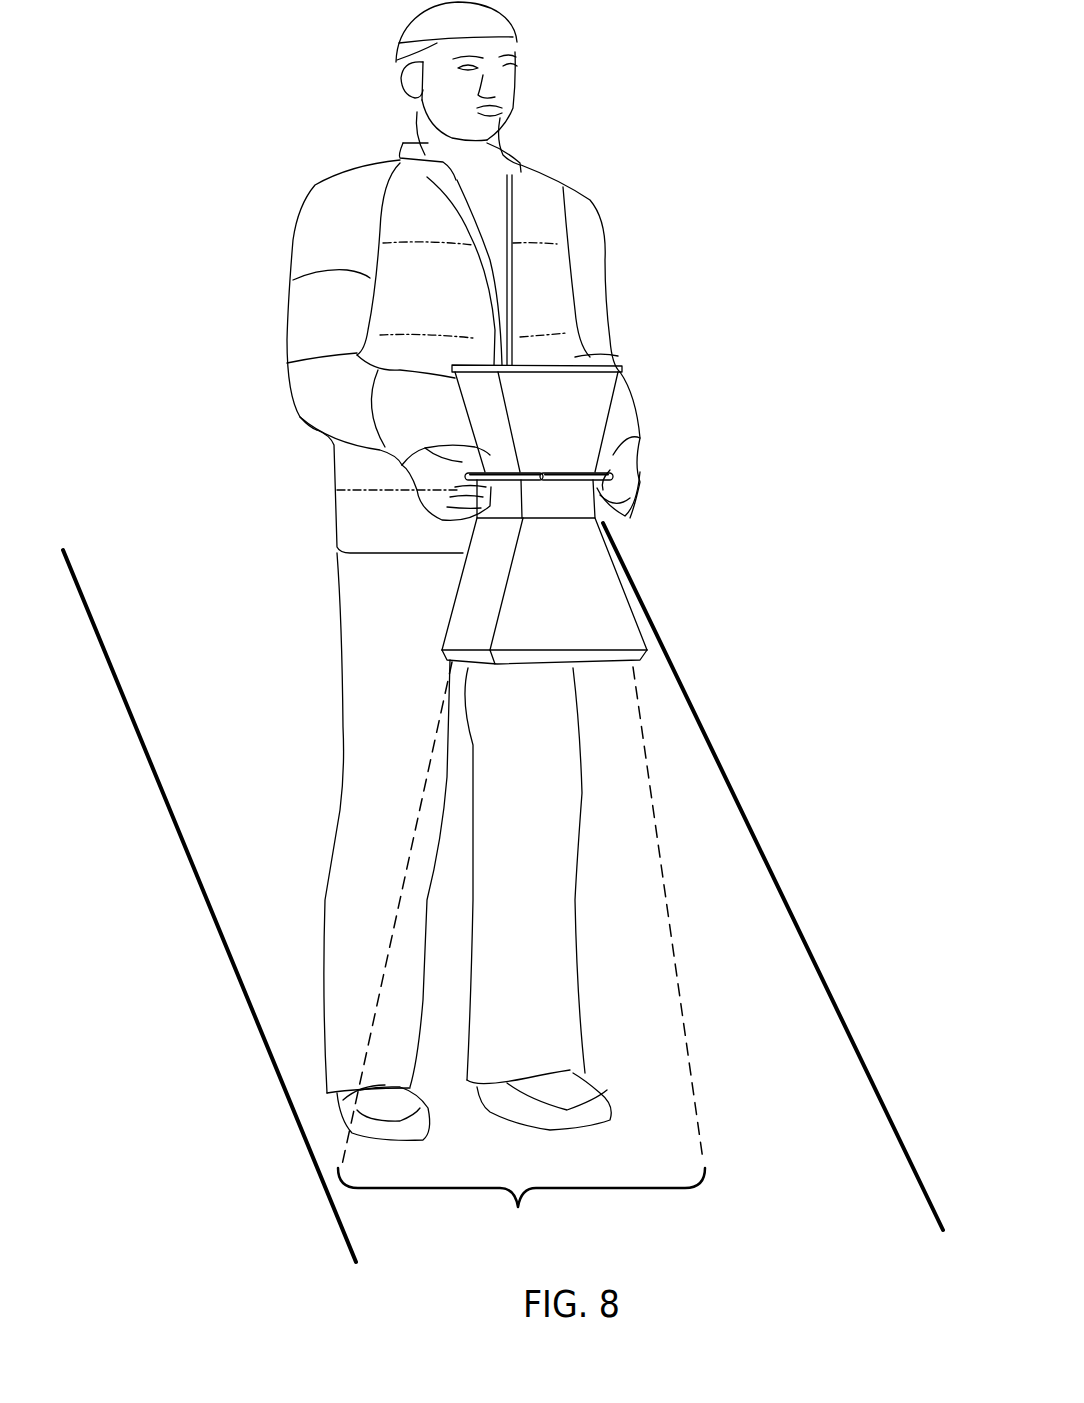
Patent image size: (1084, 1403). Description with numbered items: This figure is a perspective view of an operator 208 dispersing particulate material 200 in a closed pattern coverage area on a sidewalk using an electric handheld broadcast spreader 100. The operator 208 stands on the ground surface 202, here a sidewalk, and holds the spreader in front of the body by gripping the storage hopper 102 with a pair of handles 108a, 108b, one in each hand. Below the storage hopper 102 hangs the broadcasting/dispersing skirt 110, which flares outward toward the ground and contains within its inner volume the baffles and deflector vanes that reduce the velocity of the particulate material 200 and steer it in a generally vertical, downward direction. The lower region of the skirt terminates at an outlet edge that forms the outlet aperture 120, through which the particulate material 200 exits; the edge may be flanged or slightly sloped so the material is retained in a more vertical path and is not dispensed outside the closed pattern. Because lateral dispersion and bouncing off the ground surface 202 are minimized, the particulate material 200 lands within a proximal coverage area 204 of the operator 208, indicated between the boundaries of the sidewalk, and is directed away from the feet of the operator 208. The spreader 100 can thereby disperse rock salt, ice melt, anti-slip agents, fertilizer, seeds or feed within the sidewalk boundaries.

The operator 208 is at (303, 113).
The electric handheld broadcast spreader 100 is at (672, 570).
The storage hopper 102 is at (607, 409).
The handle 108a is at (466, 470).
The handle 108b is at (615, 476).
The broadcasting/dispersing skirt 110 is at (473, 620).
The outlet aperture 120 is at (640, 665).
The particulate material 200 is at (643, 727).
The ground surface 202 is at (800, 1131).
The proximal coverage area 204 is at (521, 1204).